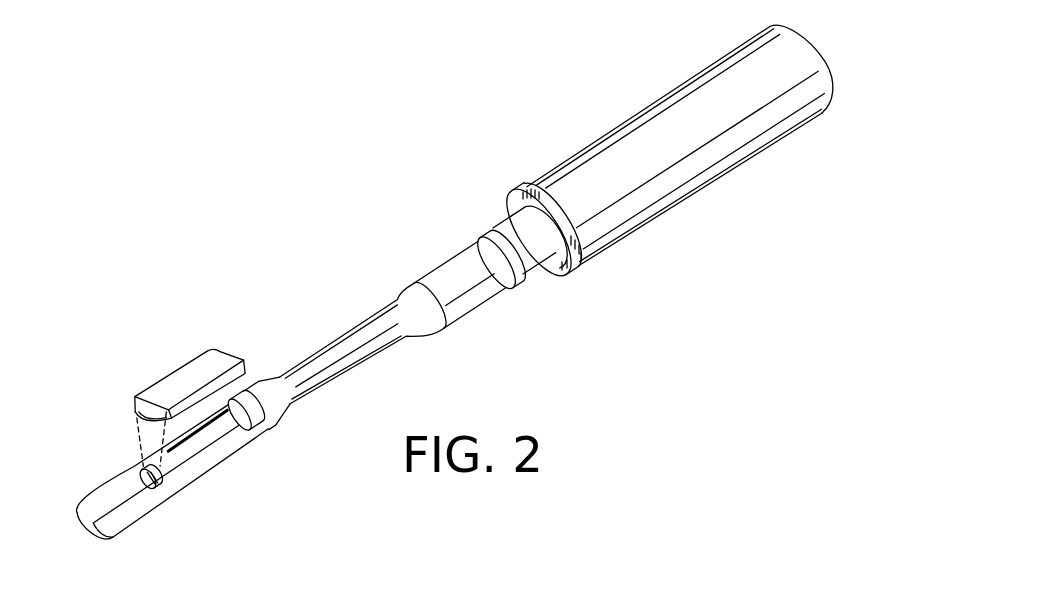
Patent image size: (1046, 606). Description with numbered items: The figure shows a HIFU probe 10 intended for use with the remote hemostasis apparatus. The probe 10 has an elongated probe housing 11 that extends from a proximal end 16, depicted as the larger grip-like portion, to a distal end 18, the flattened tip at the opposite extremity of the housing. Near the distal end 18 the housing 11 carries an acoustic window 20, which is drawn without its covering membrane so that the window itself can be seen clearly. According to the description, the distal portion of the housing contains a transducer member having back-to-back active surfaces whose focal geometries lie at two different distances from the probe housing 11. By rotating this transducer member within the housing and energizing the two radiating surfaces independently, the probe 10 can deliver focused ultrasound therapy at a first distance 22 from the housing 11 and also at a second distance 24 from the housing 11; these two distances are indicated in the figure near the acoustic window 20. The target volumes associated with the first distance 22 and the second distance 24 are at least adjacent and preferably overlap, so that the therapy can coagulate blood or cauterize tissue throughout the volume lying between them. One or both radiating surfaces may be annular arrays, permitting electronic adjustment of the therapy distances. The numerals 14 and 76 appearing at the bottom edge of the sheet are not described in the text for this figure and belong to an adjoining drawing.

The probe 10 is at (619, 310).
The probe housing 11 is at (442, 241).
The proximal end 16 is at (818, 50).
The distal end 18 is at (70, 530).
The acoustic window 20 is at (249, 424).
The first distance 22 is at (147, 366).
The second distance 24 is at (145, 424).
The element 14 (adjacent figure) 14 is at (762, 602).
The element 76 (adjacent figure) 76 is at (715, 597).